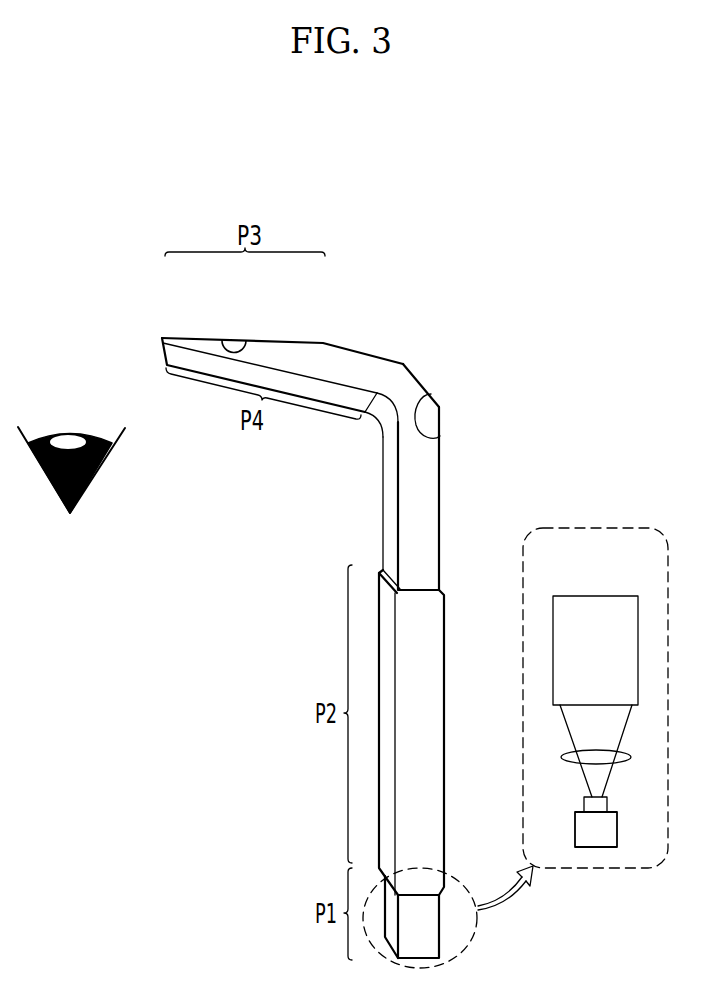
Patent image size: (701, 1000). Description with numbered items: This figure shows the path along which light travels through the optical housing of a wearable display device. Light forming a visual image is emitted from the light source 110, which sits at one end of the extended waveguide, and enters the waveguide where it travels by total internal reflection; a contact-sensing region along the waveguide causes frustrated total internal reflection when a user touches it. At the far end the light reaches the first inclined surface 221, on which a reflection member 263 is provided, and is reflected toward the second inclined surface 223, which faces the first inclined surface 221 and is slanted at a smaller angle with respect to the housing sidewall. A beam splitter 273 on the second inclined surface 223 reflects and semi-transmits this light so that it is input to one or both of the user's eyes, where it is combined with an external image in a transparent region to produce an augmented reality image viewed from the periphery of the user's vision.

The light source 110 is at (590, 567).
The first inclined surface 221 is at (417, 373).
The second inclined surface 223 is at (303, 340).
The reflection member 263 is at (440, 436).
The beam splitter 273 is at (224, 336).